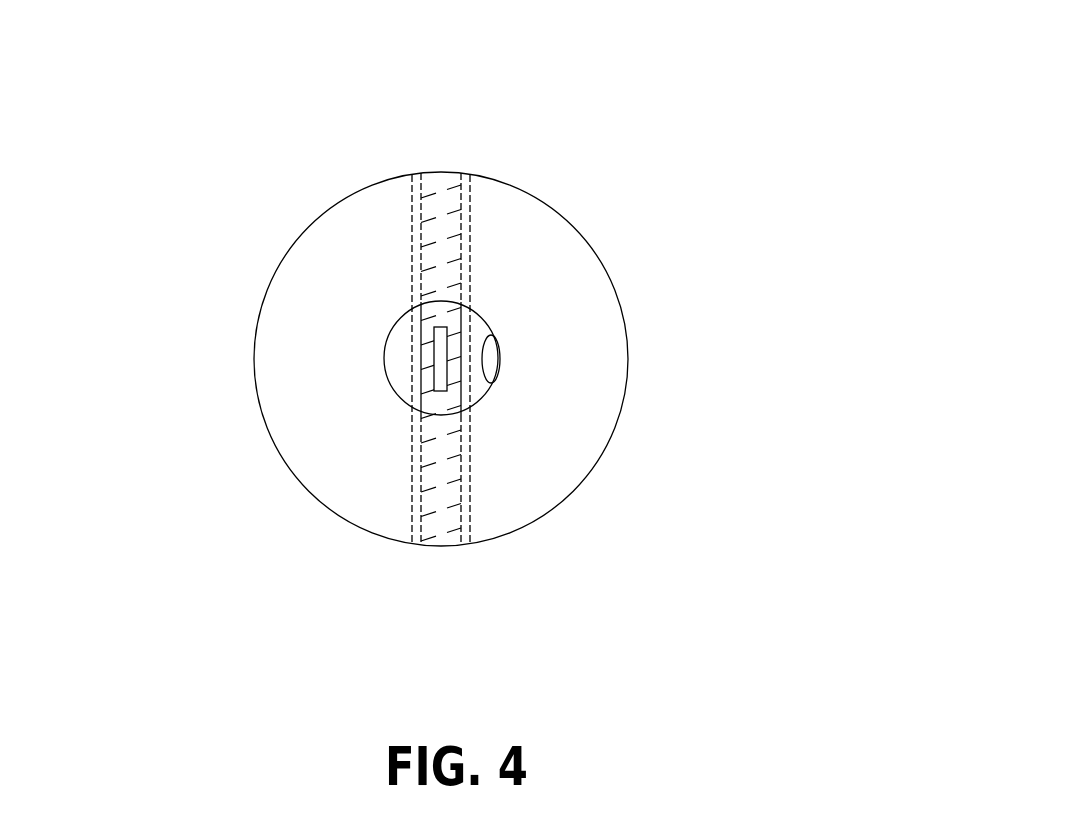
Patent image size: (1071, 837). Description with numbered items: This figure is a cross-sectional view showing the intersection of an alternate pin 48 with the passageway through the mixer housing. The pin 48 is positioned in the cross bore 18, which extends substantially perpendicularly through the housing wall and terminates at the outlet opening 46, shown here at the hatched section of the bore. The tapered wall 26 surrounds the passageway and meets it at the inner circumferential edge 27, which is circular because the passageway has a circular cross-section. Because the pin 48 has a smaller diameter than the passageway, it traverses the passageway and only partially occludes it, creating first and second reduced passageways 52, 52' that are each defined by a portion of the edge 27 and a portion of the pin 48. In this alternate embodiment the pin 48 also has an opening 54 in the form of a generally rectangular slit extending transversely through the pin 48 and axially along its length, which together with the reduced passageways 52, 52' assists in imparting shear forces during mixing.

The cross bore 18 is at (400, 249).
The tapered wall 26 is at (555, 287).
The inner circumferential edge 27 is at (496, 384).
The outlet opening 46 is at (452, 205).
The pin 48 is at (410, 335).
The first reduced passageway 52 is at (257, 393).
The second reduced passageway 52' is at (618, 213).
The opening (slit) 54 is at (426, 406).